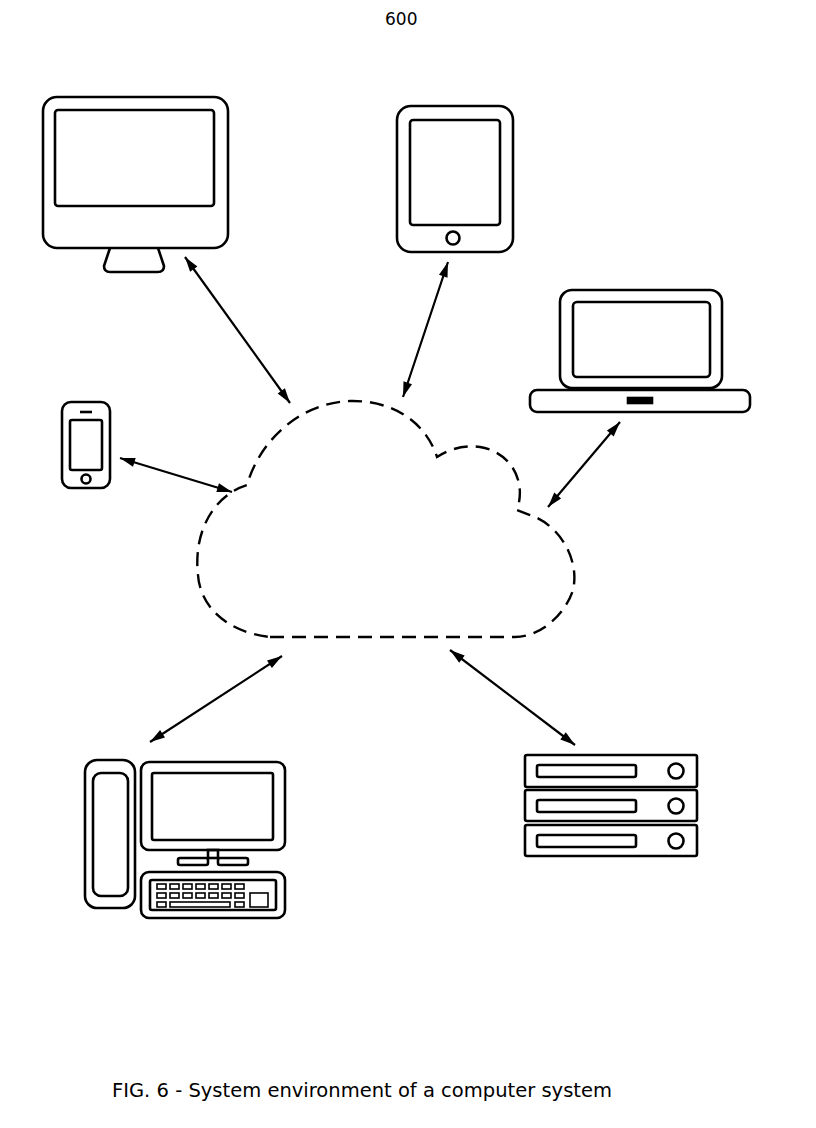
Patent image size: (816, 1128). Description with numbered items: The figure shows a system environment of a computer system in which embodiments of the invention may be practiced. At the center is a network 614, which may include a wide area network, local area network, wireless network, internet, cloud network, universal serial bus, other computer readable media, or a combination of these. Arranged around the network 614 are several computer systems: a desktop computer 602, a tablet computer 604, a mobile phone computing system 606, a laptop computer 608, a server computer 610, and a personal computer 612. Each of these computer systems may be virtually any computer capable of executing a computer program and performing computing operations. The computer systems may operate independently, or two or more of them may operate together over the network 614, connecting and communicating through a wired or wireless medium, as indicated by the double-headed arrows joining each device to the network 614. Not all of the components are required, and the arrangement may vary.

The desktop computer 602 is at (117, 80).
The tablet computer 604 is at (455, 100).
The mobile phone computing system 606 is at (85, 402).
The laptop computer 608 is at (630, 291).
The server computer 610 is at (612, 750).
The personal computer 612 is at (215, 752).
The network 614 is at (553, 608).